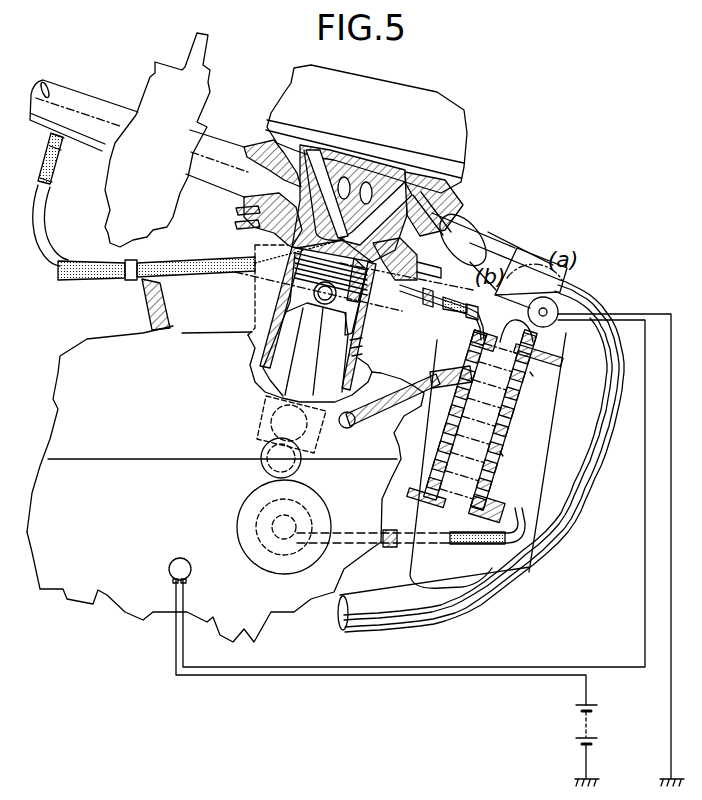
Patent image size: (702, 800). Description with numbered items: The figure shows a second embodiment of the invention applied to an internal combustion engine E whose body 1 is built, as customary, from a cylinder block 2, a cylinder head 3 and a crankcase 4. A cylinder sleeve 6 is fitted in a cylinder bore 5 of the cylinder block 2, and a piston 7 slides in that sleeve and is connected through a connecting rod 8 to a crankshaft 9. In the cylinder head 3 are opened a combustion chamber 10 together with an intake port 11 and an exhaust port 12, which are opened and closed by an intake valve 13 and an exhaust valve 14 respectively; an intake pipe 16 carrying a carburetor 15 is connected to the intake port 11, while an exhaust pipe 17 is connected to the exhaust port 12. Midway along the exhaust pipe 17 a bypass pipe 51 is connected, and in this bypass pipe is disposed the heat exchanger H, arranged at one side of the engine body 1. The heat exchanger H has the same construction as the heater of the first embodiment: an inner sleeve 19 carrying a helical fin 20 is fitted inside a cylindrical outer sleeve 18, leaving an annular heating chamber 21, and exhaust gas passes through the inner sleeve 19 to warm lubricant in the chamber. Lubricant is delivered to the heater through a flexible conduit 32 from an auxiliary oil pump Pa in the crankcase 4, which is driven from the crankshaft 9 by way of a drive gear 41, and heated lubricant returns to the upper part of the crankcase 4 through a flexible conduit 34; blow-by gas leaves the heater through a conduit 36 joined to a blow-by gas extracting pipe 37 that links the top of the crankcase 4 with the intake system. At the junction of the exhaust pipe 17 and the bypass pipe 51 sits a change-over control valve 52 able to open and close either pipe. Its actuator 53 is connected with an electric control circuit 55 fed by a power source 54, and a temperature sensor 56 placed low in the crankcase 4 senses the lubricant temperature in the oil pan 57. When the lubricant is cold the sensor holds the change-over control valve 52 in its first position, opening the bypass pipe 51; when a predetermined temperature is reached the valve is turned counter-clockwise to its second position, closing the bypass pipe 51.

The engine body 1 is at (252, 302).
The cylinder block 2 is at (366, 311).
The cylinder head 3 is at (257, 232).
The crankcase 4 is at (397, 439).
The cylinder bore 5 is at (352, 348).
The cylinder sleeve 6 is at (310, 368).
The piston 7 is at (307, 303).
The connecting rod 8 is at (304, 357).
The crankshaft 9 is at (297, 463).
The combustion chamber 10 is at (352, 203).
The intake port 11 is at (262, 222).
The exhaust port 12 is at (406, 264).
The intake valve 13 is at (305, 186).
The exhaust valve 14 is at (426, 212).
The carburetor 15 is at (144, 161).
The intake pipe 16 is at (223, 138).
The exhaust pipe 17 is at (490, 236).
The outer sleeve 18 is at (525, 392).
The inner sleeve 19 is at (506, 407).
The helical fin 20 is at (509, 432).
The annular heating chamber 21 is at (502, 458).
The flexible conduit 32 is at (500, 549).
The flexible conduit 34 is at (400, 392).
The conduit 36 is at (183, 262).
The blow-by gas extracting pipe 37 is at (112, 263).
The drive gear 41 is at (262, 465).
The bypass pipe 51 is at (420, 562).
The change-over control valve 52 is at (544, 287).
The actuator 53 is at (500, 425).
The power source 54 is at (596, 719).
The electric control circuit 55 is at (393, 678).
The temperature sensor 56 is at (180, 558).
The oil pan 57 is at (141, 612).
The internal combustion engine E is at (492, 146).
The heat exchanger H is at (493, 446).
The auxiliary oil pump Pa is at (312, 504).